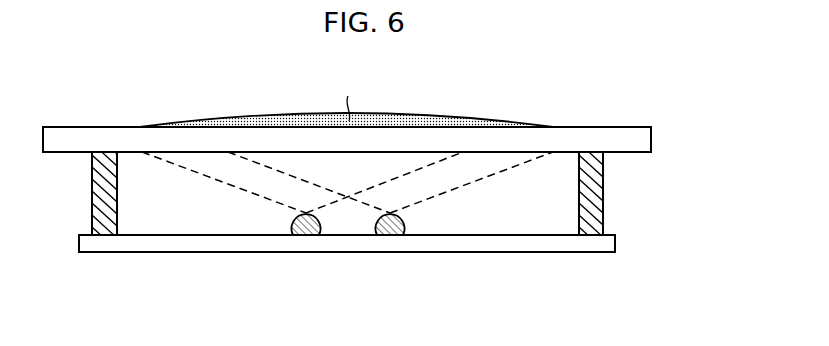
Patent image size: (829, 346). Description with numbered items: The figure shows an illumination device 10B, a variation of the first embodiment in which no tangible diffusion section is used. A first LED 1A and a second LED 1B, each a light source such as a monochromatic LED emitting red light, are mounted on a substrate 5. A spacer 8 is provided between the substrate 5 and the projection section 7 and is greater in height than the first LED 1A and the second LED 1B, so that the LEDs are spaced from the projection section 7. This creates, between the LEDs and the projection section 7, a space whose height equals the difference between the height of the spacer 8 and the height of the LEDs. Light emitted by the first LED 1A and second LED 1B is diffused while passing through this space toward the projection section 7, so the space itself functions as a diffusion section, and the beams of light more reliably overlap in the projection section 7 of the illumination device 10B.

The first light emitting diode 1A is at (306, 224).
The second light emitting diode 1B is at (390, 224).
The substrate 5 is at (615, 242).
The projection section 7 is at (651, 139).
The spacer 8 is at (603, 195).
The illumination device 10B is at (622, 88).